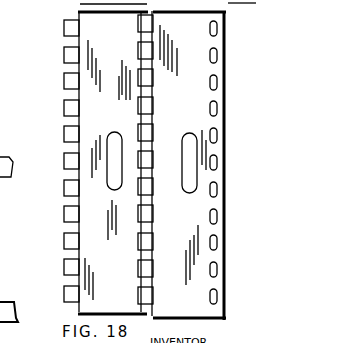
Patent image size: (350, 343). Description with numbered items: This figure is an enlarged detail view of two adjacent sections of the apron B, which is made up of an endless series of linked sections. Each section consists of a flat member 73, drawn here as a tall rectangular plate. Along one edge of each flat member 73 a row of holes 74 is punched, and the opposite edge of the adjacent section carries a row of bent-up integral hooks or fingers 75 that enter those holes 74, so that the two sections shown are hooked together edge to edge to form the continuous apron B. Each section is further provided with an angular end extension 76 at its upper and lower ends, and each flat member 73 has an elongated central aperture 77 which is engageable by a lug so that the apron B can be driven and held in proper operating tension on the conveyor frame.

The flat member 73 is at (188, 213).
The holes 74 is at (226, 120).
The bent-up integral hooks or fingers 75 is at (63, 263).
The angular end extension 76 is at (148, 14).
The central aperture 77 is at (187, 164).
The apron B is at (223, 42).